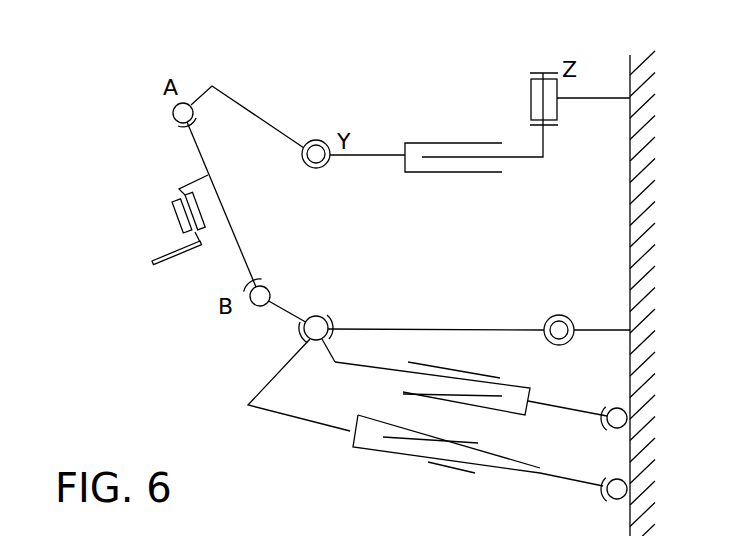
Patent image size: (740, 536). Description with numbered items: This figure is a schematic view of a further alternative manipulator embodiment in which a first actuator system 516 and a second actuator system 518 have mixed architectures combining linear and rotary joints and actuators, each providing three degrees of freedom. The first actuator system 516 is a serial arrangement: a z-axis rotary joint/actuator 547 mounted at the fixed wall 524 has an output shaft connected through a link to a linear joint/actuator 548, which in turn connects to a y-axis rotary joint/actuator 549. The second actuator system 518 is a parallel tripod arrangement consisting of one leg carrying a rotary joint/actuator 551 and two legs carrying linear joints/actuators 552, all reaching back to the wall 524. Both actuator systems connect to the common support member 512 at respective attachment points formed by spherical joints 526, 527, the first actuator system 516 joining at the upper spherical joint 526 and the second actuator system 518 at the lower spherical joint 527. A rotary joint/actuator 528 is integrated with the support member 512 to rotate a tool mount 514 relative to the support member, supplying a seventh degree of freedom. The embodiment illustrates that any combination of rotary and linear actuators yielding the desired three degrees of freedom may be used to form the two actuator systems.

The support member 512 is at (225, 211).
The tool mount 514 is at (181, 257).
The first actuator system 516 is at (440, 108).
The second actuator system 518 is at (268, 420).
The wall frame 524 is at (630, 228).
The spherical joint 526 is at (177, 113).
The spherical joint 527 is at (272, 289).
The rotary joint/actuator 528 is at (150, 213).
The z-axis rotary joint/actuator 547 is at (530, 93).
The linear joint/actuator 548 is at (440, 172).
The y-axis rotary joint/actuator 549 is at (318, 139).
The rotary joint/actuator 551 is at (568, 316).
The linear joints/actuators 552 is at (447, 368).